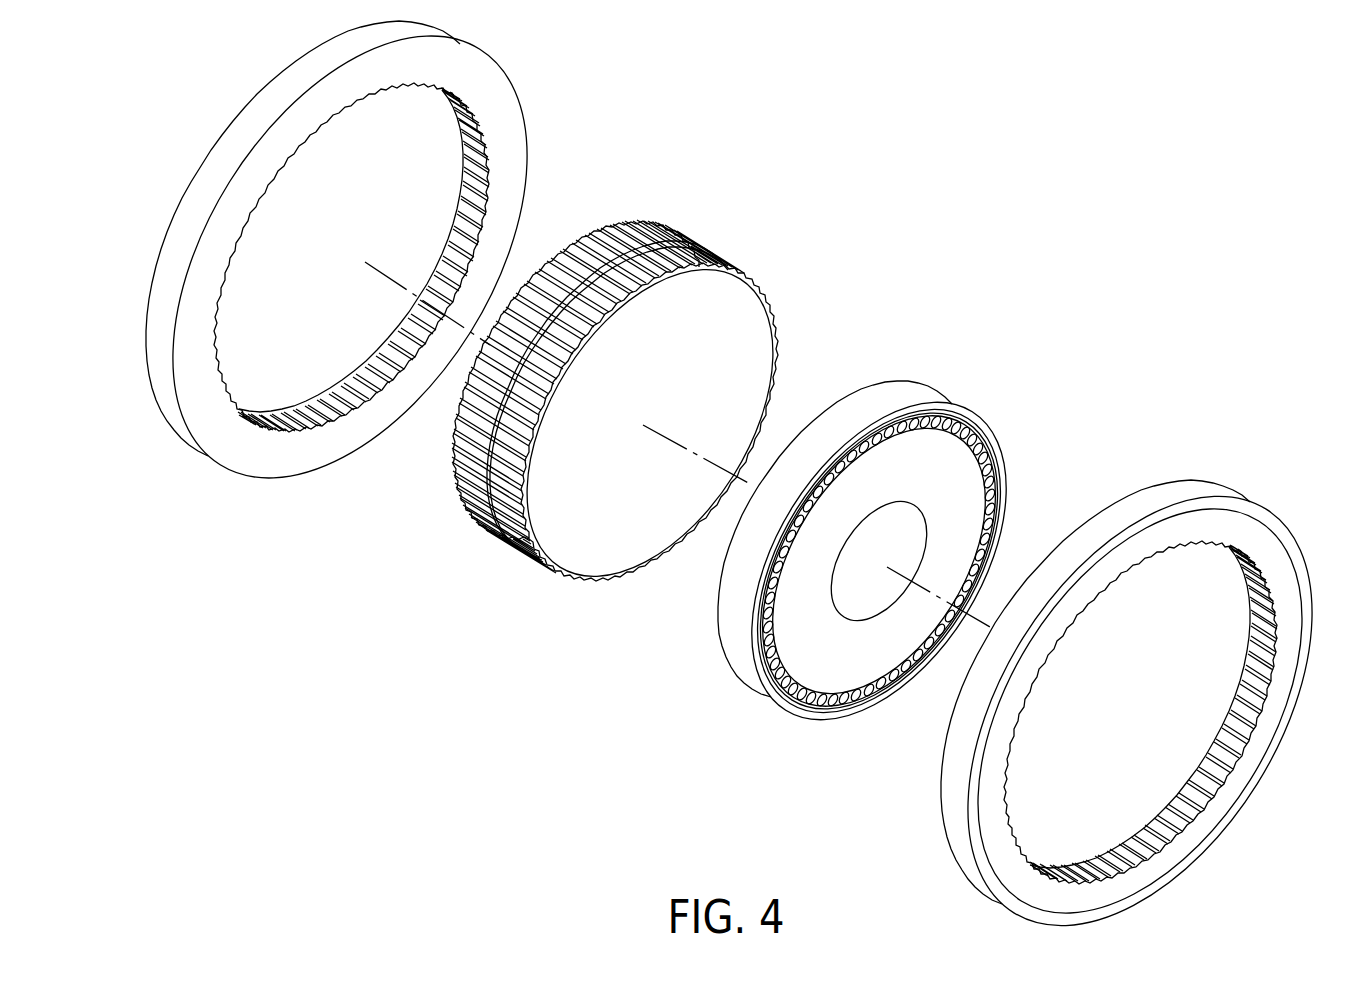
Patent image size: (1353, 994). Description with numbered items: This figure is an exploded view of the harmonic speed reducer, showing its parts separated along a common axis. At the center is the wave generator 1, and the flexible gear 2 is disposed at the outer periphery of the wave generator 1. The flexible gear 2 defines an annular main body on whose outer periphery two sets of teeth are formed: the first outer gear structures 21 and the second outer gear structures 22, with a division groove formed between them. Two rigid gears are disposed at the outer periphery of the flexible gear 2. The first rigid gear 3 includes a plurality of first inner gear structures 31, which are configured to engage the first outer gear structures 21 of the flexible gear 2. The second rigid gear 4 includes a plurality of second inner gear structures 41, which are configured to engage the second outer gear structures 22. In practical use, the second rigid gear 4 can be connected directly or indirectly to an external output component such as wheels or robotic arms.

The wave generator 1 is at (939, 393).
The flexible gear 2 is at (638, 402).
The first outer gear structures 21 is at (597, 253).
The second outer gear structures 22 is at (668, 243).
The first rigid gear 3 is at (350, 270).
The first inner gear structures 31 is at (365, 376).
The second rigid gear 4 is at (1125, 711).
The second inner gear structures 41 is at (1157, 831).